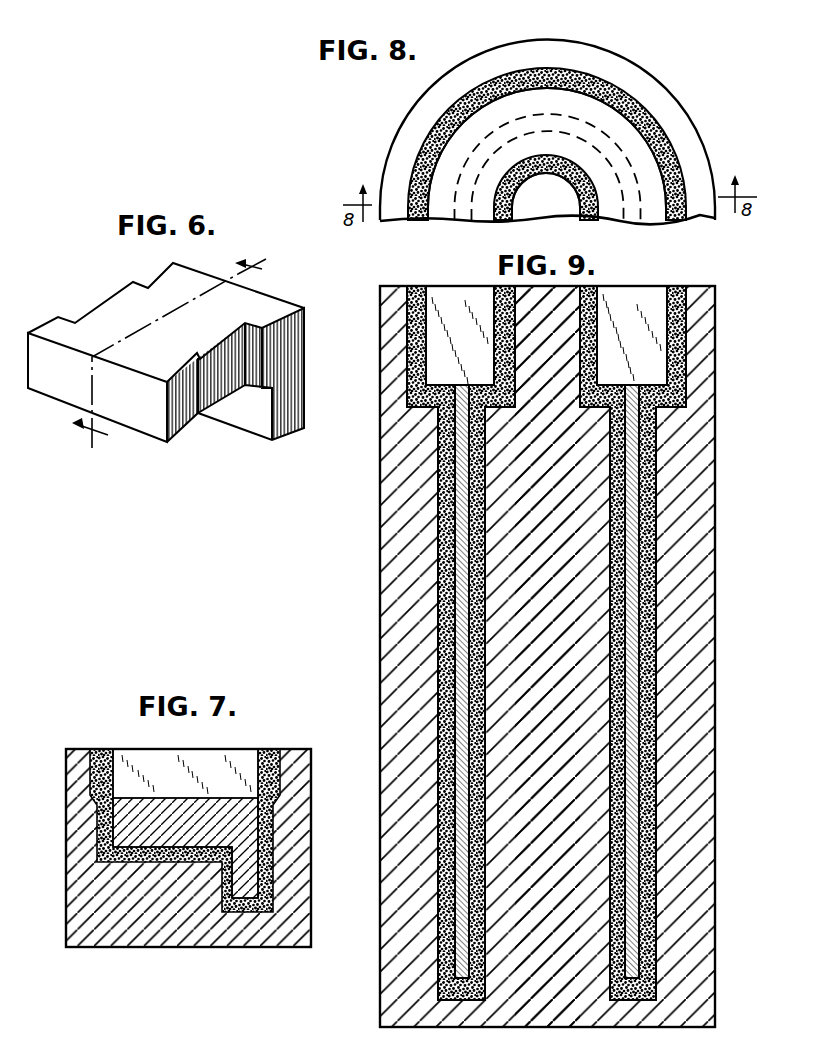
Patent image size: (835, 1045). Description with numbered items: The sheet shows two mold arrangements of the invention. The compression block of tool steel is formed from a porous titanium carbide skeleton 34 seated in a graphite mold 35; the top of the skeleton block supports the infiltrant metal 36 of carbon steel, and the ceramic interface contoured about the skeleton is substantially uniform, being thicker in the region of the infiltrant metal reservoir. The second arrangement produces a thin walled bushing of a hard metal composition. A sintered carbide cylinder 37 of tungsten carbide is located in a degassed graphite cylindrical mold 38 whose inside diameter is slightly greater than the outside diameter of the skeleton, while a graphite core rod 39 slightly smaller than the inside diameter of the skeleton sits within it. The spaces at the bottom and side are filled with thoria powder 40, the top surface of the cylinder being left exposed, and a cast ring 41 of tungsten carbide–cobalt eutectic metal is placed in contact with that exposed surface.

In FIG. 6, the porous titanium carbide skeleton 34 is at (139, 409).
In FIG. 7, the porous titanium carbide skeleton 34 is at (247, 833).
In FIG. 7, the graphite mold 35 is at (183, 933).
In FIG. 7, the infiltrant metal 36 is at (245, 755).
In FIG. 8, the sintered carbide cylinder 37 is at (458, 207).
In FIG. 9, the sintered carbide cylinder 37 is at (462, 556).
In FIG. 8, the graphite cylindrical mold 38 is at (650, 88).
In FIG. 9, the graphite cylindrical mold 38 is at (395, 586).
In FIG. 8, the graphite core rod 39 is at (553, 202).
In FIG. 9, the graphite core rod 39 is at (532, 629).
In FIG. 8, the thoria powder 40 is at (428, 138).
In FIG. 9, the thoria powder 40 is at (648, 496).
In FIG. 8, the cast ring 41 is at (637, 138).
In FIG. 9, the cast ring 41 is at (643, 300).